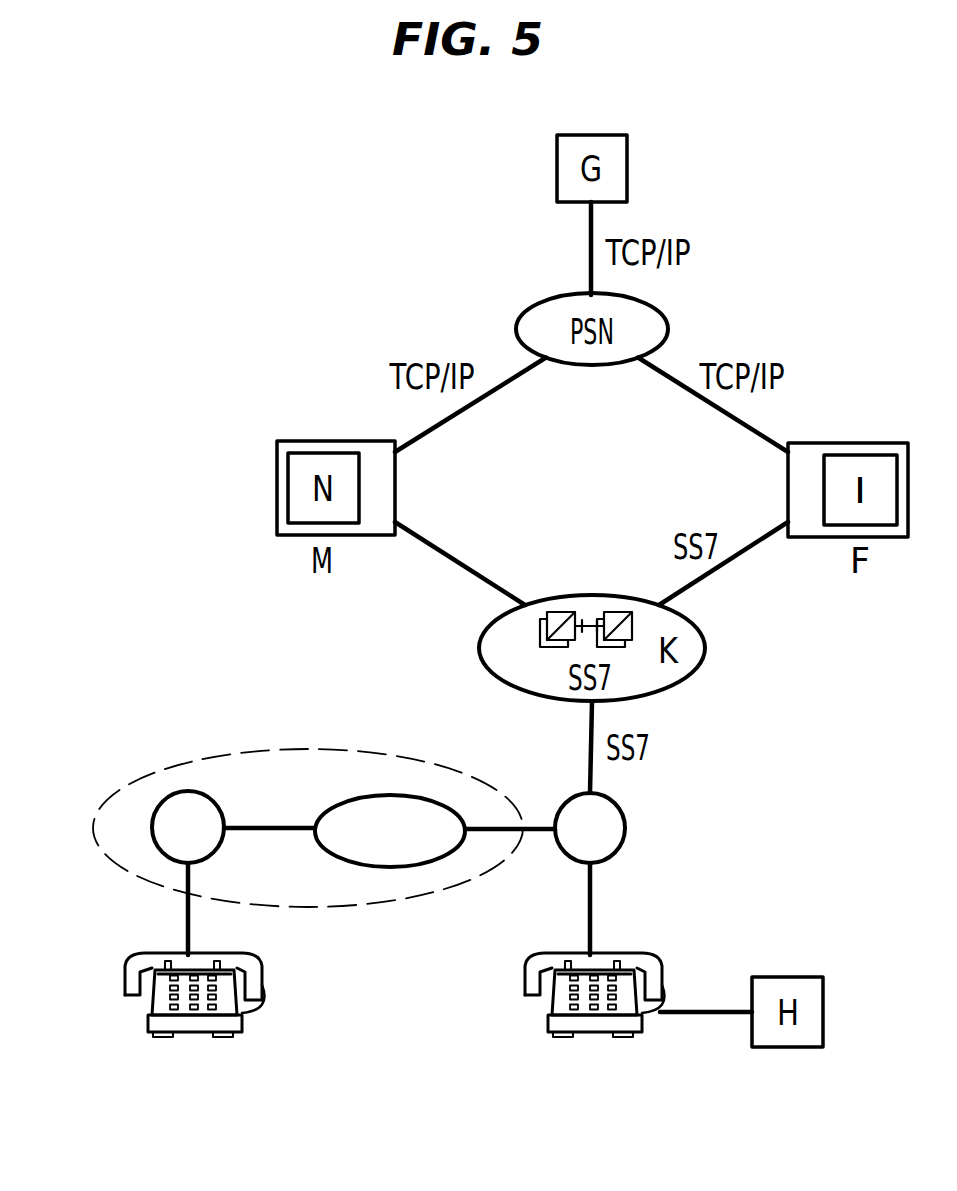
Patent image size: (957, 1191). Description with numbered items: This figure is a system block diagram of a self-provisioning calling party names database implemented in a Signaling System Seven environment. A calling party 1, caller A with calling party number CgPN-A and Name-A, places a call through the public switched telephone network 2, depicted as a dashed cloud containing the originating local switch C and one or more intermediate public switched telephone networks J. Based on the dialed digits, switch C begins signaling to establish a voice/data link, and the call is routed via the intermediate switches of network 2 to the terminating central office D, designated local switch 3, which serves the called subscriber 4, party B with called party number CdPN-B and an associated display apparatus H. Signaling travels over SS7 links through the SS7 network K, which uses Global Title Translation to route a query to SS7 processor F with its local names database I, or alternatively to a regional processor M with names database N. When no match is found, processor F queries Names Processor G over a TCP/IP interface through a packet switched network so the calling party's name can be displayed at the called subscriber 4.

The calling party 1 is at (148, 1020).
The public switched telephone network 2 is at (378, 907).
The local switch 3 is at (627, 831).
The called subscriber 4 is at (550, 1020).